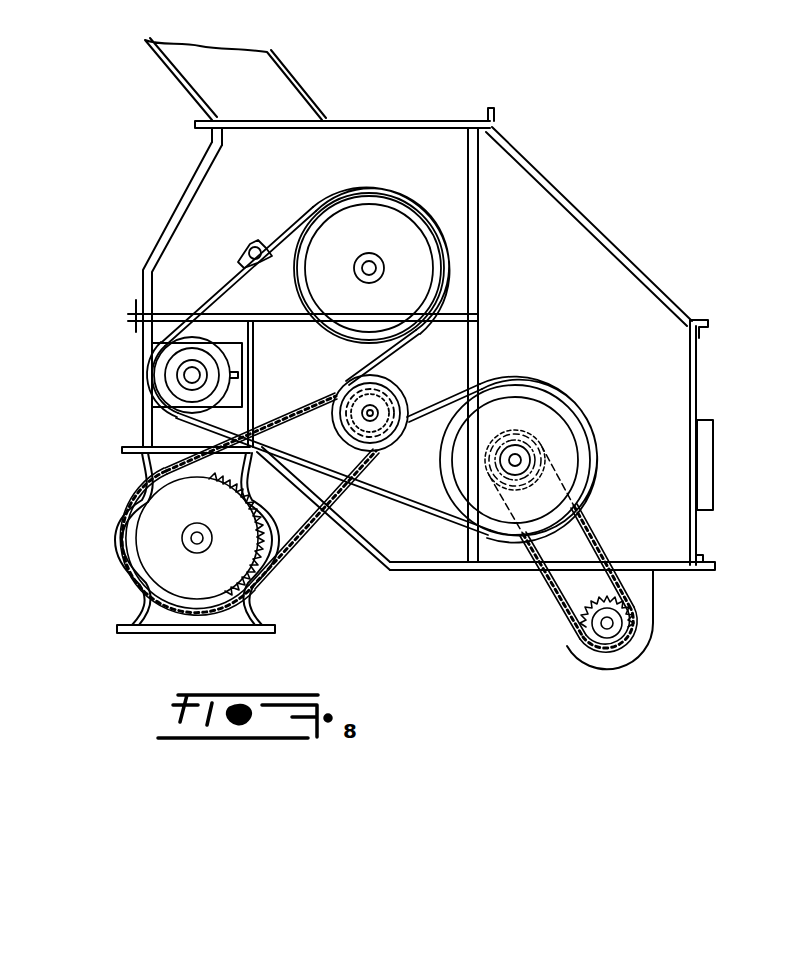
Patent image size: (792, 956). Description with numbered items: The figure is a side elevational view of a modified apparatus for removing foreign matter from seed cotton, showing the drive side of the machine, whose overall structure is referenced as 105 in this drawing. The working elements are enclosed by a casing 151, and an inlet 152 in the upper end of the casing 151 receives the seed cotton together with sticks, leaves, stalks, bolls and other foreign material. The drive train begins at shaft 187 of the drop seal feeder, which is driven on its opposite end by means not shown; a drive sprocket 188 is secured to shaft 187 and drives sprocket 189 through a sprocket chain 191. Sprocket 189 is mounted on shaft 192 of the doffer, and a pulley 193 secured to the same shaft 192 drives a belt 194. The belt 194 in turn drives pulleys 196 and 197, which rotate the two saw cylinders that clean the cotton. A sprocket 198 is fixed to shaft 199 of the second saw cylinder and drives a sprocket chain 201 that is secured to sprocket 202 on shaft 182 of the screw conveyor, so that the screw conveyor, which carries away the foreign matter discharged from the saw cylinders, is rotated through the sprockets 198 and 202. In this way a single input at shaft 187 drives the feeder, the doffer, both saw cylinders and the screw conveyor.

The machine frame 105 is at (700, 380).
The casing 151 is at (162, 240).
The inlet 152 is at (296, 97).
The shaft 182 is at (615, 623).
The shaft 187 is at (204, 537).
The drive sprocket 188 is at (137, 556).
The sprocket 189 is at (398, 404).
The sprocket chain 191 is at (298, 536).
The shaft 192 is at (376, 408).
The pulley 193 is at (345, 391).
The belt 194 is at (223, 298).
The pulley 196 is at (386, 210).
The pulley 197 is at (578, 449).
The sprocket 198 is at (508, 478).
The shaft 199 is at (516, 456).
The sprocket chain 201 is at (592, 537).
The sprocket 202 is at (583, 645).